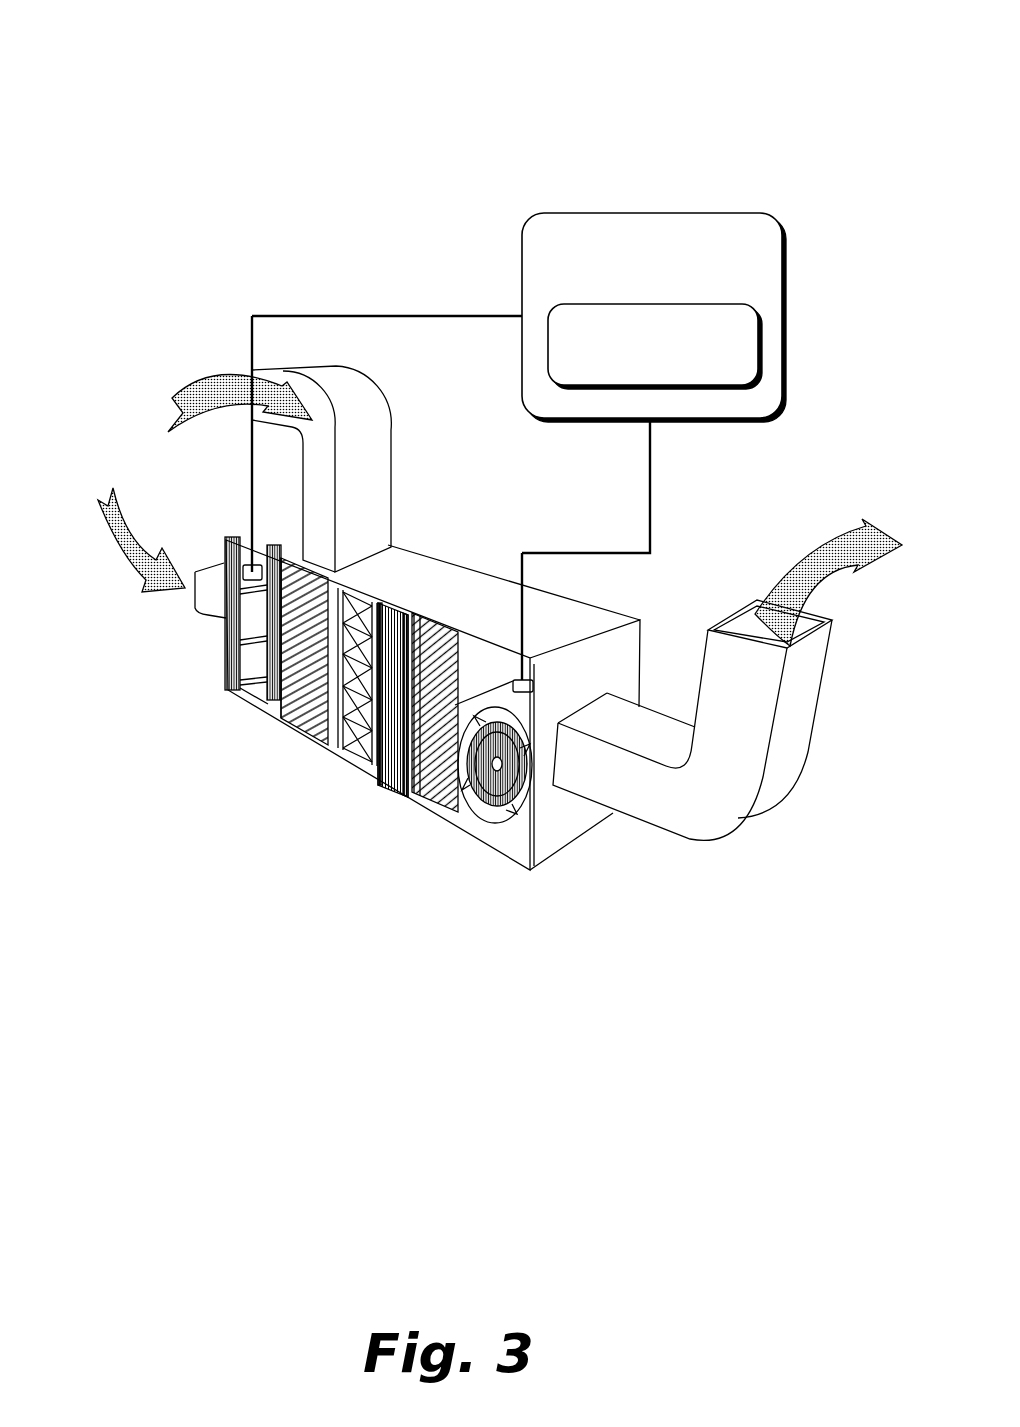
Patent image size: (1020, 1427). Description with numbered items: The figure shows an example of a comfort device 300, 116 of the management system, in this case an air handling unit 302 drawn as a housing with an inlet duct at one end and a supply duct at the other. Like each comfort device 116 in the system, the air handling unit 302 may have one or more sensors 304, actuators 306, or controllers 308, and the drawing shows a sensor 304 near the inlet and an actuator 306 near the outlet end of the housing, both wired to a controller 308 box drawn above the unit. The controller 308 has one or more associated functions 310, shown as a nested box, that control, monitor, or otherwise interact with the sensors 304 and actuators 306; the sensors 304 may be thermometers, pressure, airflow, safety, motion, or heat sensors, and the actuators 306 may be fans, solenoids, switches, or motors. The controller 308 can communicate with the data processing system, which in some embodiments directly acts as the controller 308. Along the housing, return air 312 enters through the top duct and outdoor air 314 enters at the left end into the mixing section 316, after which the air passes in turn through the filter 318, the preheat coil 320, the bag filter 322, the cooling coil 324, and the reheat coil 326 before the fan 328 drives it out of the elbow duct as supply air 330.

The comfort device 300 is at (118, 88).
The comfort device 116 is at (106, 74).
The air handling unit 302 is at (410, 797).
The sensors 304 is at (252, 563).
The actuators 306 is at (543, 663).
The controller 308 is at (633, 251).
The functions 310 is at (633, 343).
The return air 312 is at (193, 395).
The outdoor air 314 is at (100, 510).
The mixing section 316 is at (327, 620).
The filter 318 is at (243, 657).
The preheat coil 320 is at (289, 648).
The bag filter 322 is at (357, 755).
The cooling coil 324 is at (397, 628).
The reheat coil 326 is at (457, 665).
The fan 328 is at (497, 810).
The supply air 330 is at (787, 607).